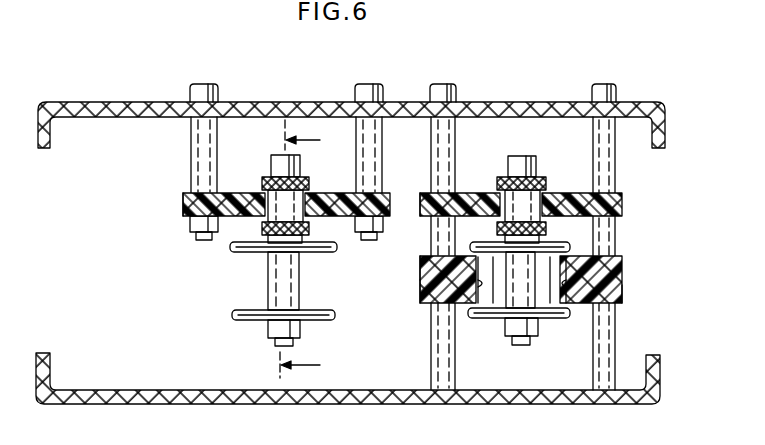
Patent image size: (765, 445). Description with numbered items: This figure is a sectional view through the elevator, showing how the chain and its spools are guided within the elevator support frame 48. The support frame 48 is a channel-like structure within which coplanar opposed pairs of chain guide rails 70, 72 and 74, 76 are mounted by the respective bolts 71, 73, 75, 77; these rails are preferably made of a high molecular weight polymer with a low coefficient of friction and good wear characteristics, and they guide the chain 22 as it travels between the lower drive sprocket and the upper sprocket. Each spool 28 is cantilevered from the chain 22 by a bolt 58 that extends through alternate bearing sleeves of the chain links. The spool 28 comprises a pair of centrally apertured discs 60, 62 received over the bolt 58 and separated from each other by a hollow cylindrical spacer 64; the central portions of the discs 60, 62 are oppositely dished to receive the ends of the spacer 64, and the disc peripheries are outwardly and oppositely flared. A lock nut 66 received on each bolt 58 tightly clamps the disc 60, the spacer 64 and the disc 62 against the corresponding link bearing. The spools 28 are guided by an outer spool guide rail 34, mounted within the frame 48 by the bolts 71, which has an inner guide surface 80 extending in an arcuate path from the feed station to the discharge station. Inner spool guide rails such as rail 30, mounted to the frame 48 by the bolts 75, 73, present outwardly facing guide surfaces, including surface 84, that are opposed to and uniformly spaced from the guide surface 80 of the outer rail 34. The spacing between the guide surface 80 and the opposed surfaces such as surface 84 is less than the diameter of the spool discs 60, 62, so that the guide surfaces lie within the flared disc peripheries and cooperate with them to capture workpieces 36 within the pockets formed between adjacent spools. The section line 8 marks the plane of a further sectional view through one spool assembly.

The elevator support frame 48 is at (521, 102).
The bolt 77 is at (212, 84).
The bolt 75 is at (380, 84).
The bolt 73 is at (449, 84).
The bolt 71 is at (617, 88).
The chain guide rail 74 is at (389, 196).
The chain guide rail 70 is at (623, 204).
The chain guide rail 76 is at (182, 209).
The chain guide rail 72 is at (420, 208).
The chain 22 is at (254, 181).
The bolt 58 is at (301, 163).
The disc 62 is at (250, 251).
The hollow cylindrical spacer 64 is at (299, 283).
The disc 60 is at (240, 321).
The lock nut 66 is at (301, 334).
The spool 28 is at (224, 309).
The section line 8 is at (295, 249).
The inner spool guide rail 30 is at (625, 264).
The inner guide surface 80 is at (624, 291).
The outer spool guide rail 34 is at (424, 266).
The outwardly facing guide surface 84 is at (430, 296).
The workpiece 36 is at (548, 240).